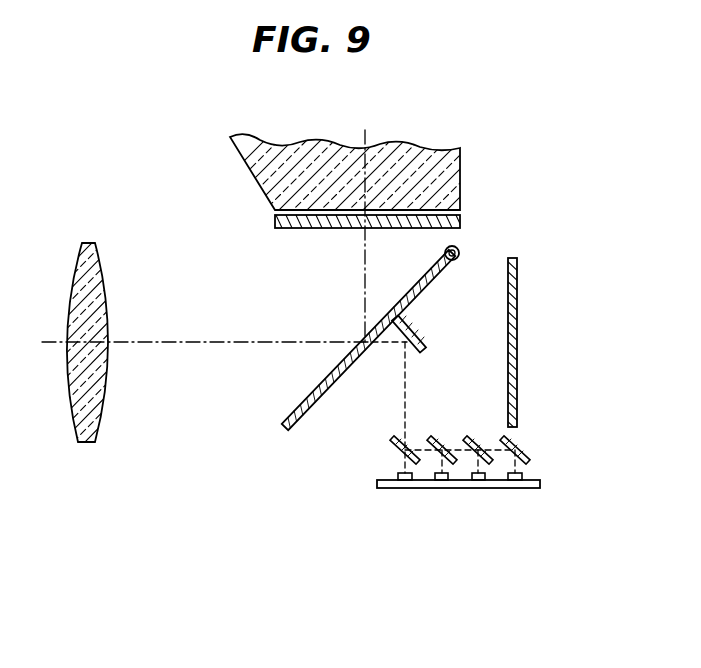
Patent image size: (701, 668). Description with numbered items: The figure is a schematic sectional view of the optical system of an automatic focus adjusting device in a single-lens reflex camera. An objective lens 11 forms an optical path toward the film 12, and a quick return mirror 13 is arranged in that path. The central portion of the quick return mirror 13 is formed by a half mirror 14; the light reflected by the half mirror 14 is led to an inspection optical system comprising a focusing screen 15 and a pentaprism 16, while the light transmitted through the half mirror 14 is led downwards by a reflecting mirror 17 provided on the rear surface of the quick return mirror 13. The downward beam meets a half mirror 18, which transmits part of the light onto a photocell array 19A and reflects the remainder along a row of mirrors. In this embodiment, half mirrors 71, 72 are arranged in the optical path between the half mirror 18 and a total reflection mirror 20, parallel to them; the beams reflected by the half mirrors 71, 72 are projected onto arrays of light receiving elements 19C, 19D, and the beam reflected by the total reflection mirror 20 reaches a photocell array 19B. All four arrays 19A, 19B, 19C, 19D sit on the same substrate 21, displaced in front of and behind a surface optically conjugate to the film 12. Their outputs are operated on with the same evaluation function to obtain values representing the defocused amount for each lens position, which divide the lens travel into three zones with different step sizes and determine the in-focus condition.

The objective lens 11 is at (100, 262).
The film 12 is at (518, 276).
The quick return mirror 13 is at (317, 390).
The half mirror 14 is at (370, 327).
The focusing screen 15 is at (275, 221).
The pentaprism 16 is at (254, 183).
The reflecting mirror 17 is at (414, 338).
The half mirror 18 is at (398, 440).
The photocell array 19A is at (400, 475).
The photocell array 19B is at (520, 478).
The array of light receiving elements 19C is at (433, 480).
The array of light receiving elements 19D is at (483, 482).
The total reflection mirror 20 is at (520, 444).
The substrate 21 is at (463, 490).
The half mirror 71 is at (440, 438).
The half mirror 72 is at (477, 438).